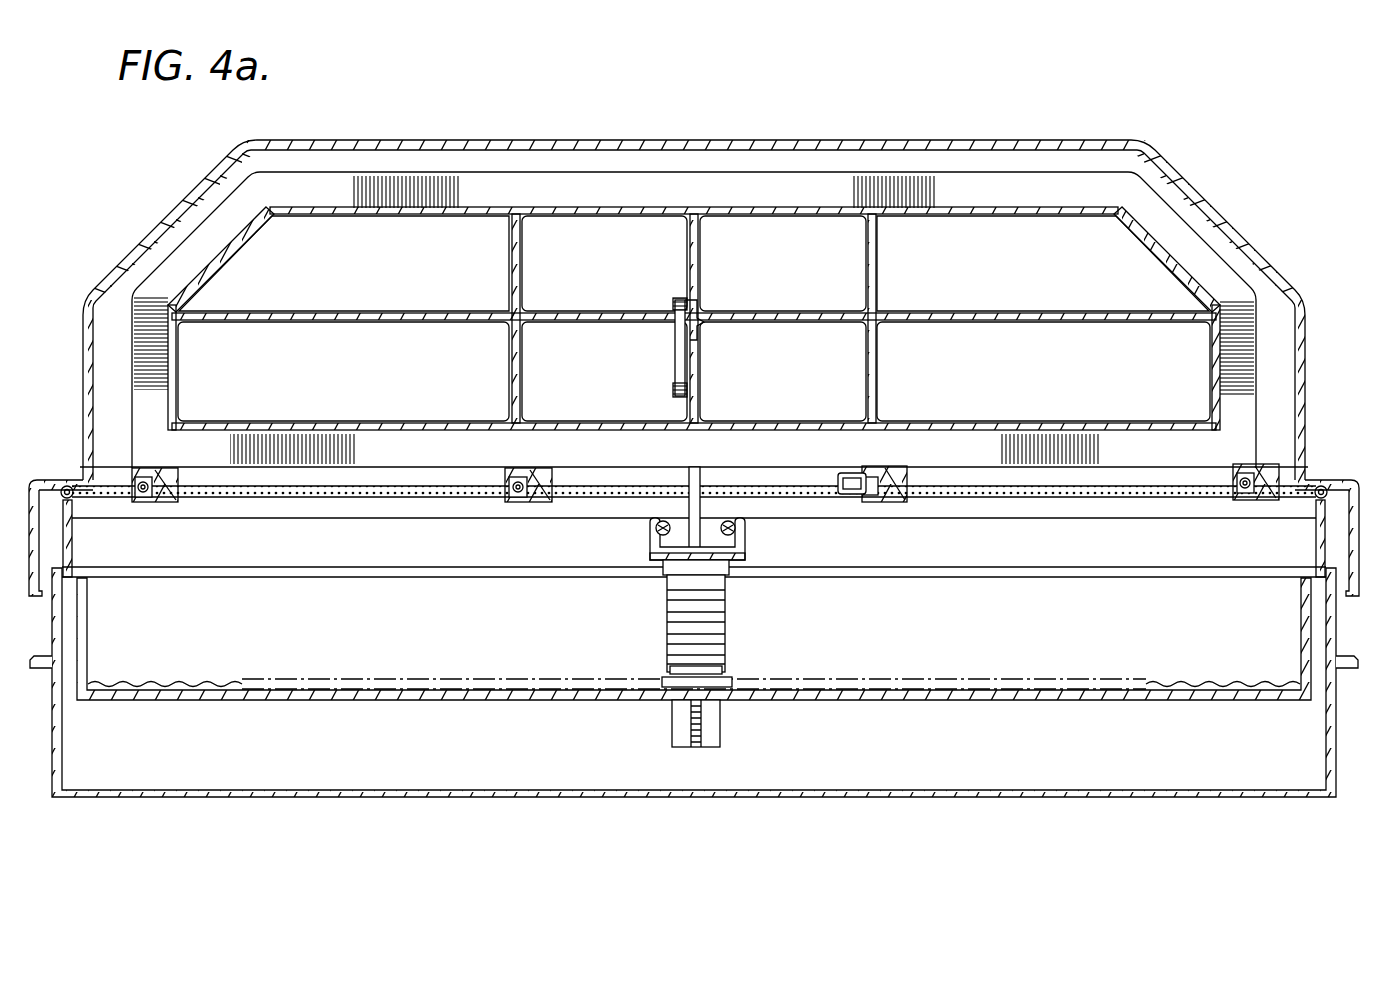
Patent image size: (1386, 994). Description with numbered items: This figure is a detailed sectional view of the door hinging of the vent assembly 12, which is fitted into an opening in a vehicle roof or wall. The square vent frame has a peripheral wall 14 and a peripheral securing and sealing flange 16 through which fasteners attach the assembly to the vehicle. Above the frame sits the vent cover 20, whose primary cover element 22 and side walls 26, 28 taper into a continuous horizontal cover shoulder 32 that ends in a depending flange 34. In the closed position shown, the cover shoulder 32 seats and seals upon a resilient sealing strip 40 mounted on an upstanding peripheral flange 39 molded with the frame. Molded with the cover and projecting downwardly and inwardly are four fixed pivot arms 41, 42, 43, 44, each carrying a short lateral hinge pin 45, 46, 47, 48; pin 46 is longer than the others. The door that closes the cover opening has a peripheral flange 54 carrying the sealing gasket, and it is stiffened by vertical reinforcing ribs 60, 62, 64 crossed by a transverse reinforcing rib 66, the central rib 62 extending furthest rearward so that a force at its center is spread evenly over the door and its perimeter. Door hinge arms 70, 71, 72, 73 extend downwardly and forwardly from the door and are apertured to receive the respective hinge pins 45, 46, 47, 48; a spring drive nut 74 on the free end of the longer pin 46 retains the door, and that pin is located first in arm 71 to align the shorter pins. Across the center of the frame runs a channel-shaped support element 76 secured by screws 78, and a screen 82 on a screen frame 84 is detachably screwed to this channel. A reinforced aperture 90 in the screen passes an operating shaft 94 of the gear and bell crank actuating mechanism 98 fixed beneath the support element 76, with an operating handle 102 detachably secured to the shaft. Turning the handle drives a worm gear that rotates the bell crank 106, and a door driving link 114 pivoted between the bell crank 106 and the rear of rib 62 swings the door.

The vent assembly 12 is at (55, 430).
The peripheral wall 14 is at (62, 756).
The peripheral securing and sealing flange 16 is at (46, 657).
The vent cover 20 is at (930, 136).
The primary cover element 22 is at (742, 140).
The side wall 26 is at (83, 375).
The side wall 28 is at (1305, 380).
The cover shoulder 32 is at (60, 482).
The depending flange 34 is at (36, 593).
The upstanding peripheral flange 39 is at (1316, 530).
The resilient sealing strip 40 is at (104, 486).
The fixed pivot arm 41 is at (1262, 466).
The fixed pivot arm 42 is at (895, 502).
The fixed pivot arm 43 is at (534, 502).
The fixed pivot arm 44 is at (165, 504).
The hinge pin 45 is at (1240, 502).
The hinge pin 46 is at (858, 502).
The hinge pin 47 is at (510, 502).
The hinge pin 48 is at (140, 502).
The peripheral flange 54 is at (1062, 207).
The reinforcing rib 60 is at (512, 373).
The reinforcing rib 62 is at (690, 262).
The reinforcing rib 64 is at (880, 292).
The transverse reinforcing rib 66 is at (420, 316).
The door hinge arm 70 is at (1244, 470).
The door hinge arm 71 is at (878, 470).
The door hinge arm 72 is at (516, 470).
The door hinge arm 73 is at (146, 474).
The spring drive nut 74 is at (848, 474).
The support element 76 is at (745, 554).
The screw 78 is at (655, 528).
The screen 82 is at (218, 682).
The screen frame 84 is at (87, 645).
The reinforced aperture 90 is at (728, 680).
The operating shaft 94 is at (692, 677).
The actuating and positioning mechanism 98 is at (664, 617).
The operating handle 102 is at (720, 727).
The bell crank 106 is at (690, 478).
The door driving link 114 is at (676, 362).